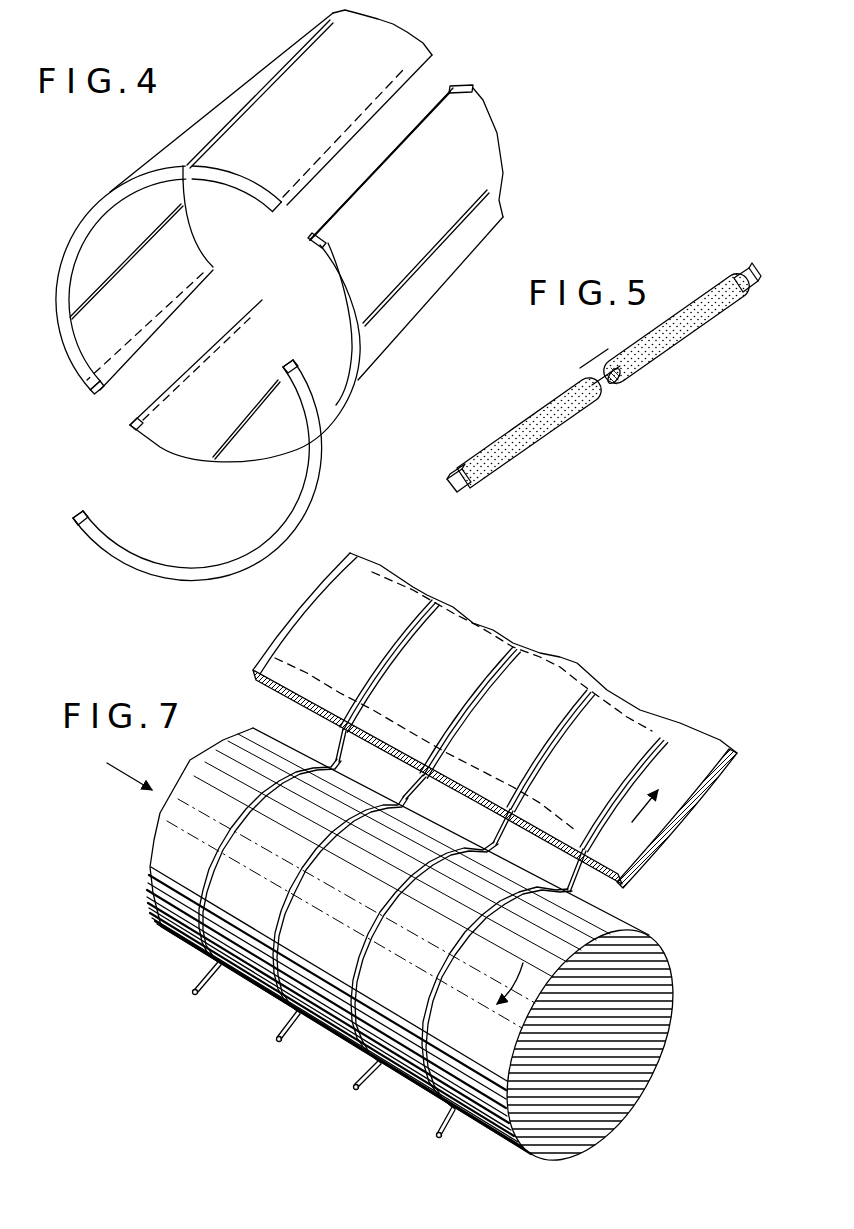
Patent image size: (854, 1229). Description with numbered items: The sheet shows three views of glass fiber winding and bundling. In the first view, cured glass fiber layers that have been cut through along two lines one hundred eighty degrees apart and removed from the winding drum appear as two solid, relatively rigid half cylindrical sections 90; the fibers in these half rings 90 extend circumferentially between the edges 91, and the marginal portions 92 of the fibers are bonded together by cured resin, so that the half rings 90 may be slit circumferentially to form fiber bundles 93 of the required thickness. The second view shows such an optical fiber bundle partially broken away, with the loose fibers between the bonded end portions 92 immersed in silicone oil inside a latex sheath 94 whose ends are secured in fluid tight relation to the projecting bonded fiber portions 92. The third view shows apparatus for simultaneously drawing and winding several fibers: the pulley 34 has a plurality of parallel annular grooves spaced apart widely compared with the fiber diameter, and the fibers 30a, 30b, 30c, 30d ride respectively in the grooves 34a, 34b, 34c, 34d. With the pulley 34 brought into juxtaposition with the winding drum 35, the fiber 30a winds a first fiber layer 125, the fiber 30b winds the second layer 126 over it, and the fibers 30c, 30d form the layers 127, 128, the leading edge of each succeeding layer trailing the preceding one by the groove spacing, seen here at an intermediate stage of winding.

In FIG. 4, the half cylindrical section 90 is at (402, 50).
In FIG. 4, the edge 91 is at (360, 182).
In FIG. 5, the edge 91 is at (603, 381).
In FIG. 4, the marginal portion 92 is at (450, 92).
In FIG. 5, the marginal portion 92 is at (458, 474).
In FIG. 4, the fiber bundle 93 is at (320, 477).
In FIG. 5, the latex sheath 94 is at (580, 380).
In FIG. 7, the pulley 34 is at (187, 812).
In FIG. 7, the groove 34a is at (483, 948).
In FIG. 7, the groove 34b is at (400, 908).
In FIG. 7, the groove 34c is at (327, 857).
In FIG. 7, the groove 34d is at (240, 818).
In FIG. 7, the fiber 30a is at (440, 1111).
In FIG. 7, the fiber 30b is at (360, 1066).
In FIG. 7, the fiber 30c is at (290, 1016).
In FIG. 7, the fiber 30d is at (197, 977).
In FIG. 7, the winding drum 35 is at (258, 631).
In FIG. 7, the first fiber layer 125 is at (662, 736).
In FIG. 7, the second layer 126 is at (590, 688).
In FIG. 7, the layer 127 is at (515, 645).
In FIG. 7, the layer 128 is at (431, 598).